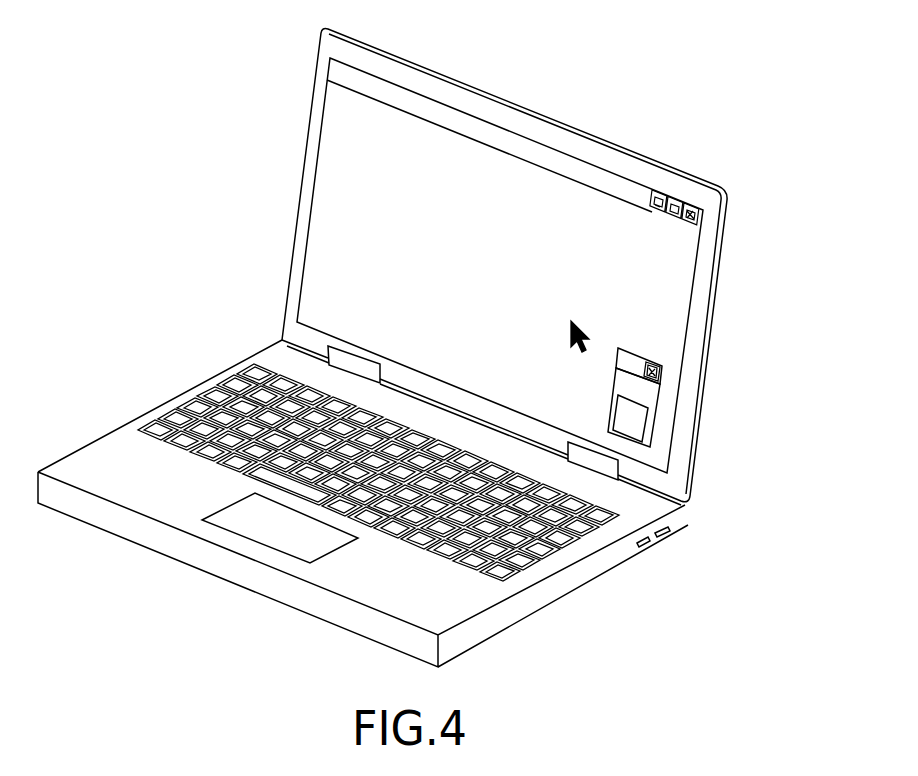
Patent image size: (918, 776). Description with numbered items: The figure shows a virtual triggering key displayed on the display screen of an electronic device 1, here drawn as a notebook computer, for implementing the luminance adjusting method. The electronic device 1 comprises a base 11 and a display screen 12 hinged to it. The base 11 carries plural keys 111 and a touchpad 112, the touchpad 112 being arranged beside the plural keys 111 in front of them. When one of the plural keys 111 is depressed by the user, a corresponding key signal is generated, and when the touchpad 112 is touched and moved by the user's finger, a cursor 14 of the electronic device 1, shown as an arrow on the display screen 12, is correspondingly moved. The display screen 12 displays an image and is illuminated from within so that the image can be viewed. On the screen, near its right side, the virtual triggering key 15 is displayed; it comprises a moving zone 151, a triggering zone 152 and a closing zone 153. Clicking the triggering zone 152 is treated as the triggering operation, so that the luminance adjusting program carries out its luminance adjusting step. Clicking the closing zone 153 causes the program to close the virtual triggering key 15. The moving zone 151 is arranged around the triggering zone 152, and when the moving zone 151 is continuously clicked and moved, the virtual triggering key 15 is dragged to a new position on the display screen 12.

The electronic device 1 is at (170, 151).
The base 11 is at (97, 454).
The plural keys 111 is at (253, 410).
The touchpad 112 is at (267, 532).
The display screen 12 is at (570, 166).
The cursor 14 is at (578, 325).
The virtual triggering key 15 is at (632, 345).
The moving zone 151 is at (647, 397).
The triggering zone 152 is at (637, 428).
The closing zone 153 is at (657, 358).